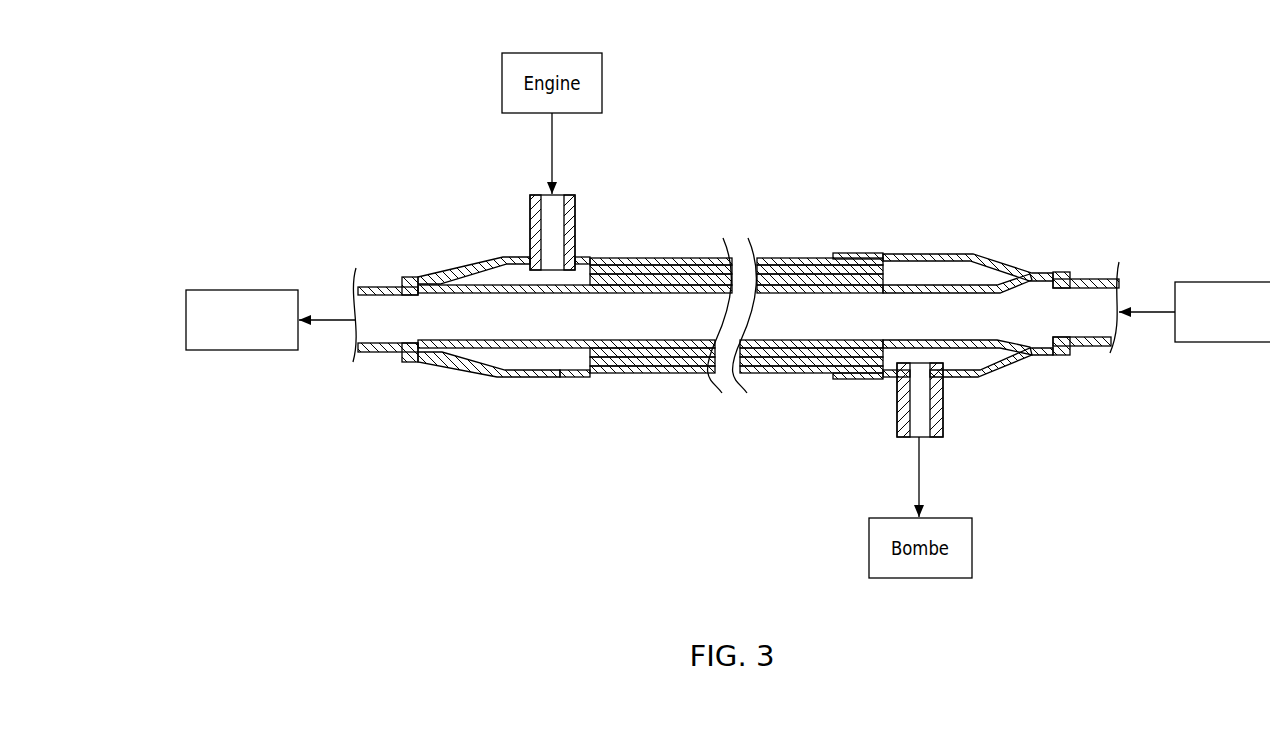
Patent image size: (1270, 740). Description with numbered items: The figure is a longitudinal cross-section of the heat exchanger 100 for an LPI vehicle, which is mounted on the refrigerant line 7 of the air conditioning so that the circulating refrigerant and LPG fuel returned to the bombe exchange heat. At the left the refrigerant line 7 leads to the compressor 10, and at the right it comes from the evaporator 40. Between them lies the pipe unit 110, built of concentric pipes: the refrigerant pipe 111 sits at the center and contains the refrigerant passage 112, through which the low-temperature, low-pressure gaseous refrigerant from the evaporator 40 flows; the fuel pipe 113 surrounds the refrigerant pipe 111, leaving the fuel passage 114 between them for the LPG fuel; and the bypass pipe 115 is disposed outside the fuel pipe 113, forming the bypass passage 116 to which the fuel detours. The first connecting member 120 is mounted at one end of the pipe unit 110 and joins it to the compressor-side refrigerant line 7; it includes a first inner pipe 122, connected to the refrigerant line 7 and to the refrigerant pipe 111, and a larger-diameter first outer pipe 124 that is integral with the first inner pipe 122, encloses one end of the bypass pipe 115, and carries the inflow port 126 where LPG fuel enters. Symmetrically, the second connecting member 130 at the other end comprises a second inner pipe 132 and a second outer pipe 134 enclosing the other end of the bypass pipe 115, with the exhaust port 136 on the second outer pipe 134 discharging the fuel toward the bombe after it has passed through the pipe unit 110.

The refrigerant line 7 is at (1093, 279).
The compressor 10 is at (247, 290).
The evaporator 40 is at (1220, 282).
The heat exchanger 100 is at (918, 123).
The pipe unit 110 is at (823, 250).
The refrigerant pipe 111 is at (643, 290).
The refrigerant passage 112 is at (630, 326).
The fuel pipe 113 is at (765, 257).
The fuel passage 114 is at (675, 282).
The bypass pipe 115 is at (800, 257).
The bypass passage 116 is at (858, 379).
The first connecting member 120 is at (471, 390).
The first inner pipe 122 is at (563, 378).
The first outer pipe 124 is at (516, 378).
The inflow port 126 is at (530, 217).
The second connecting member 130 is at (1022, 247).
The second inner pipe 132 is at (945, 287).
The second outer pipe 134 is at (985, 254).
The exhaust port 136 is at (943, 405).